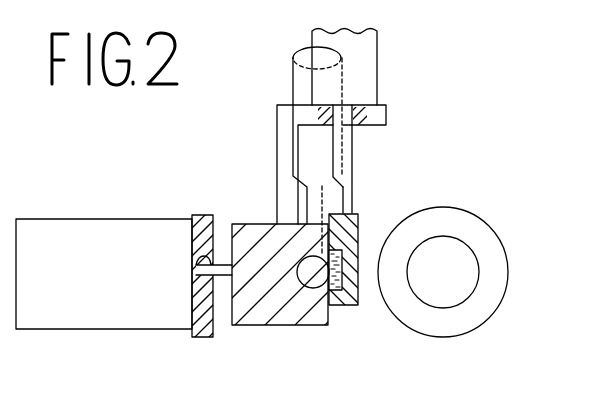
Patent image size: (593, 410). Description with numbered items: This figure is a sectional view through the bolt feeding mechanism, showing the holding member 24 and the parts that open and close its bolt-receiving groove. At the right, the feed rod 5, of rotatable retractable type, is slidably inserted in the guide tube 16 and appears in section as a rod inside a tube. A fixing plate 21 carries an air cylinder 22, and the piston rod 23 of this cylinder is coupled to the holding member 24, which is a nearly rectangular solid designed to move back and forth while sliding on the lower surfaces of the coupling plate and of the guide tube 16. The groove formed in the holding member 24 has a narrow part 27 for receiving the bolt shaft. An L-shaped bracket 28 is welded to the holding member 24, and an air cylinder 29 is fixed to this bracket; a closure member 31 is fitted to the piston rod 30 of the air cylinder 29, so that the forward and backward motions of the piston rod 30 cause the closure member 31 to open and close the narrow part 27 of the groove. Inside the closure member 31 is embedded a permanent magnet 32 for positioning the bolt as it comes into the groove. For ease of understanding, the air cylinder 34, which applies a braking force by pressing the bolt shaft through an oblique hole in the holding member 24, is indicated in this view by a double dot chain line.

The feed rod 5 is at (478, 262).
The guide tube 16 is at (480, 204).
The fixing plate 21 is at (205, 215).
The air cylinder 22 is at (118, 219).
The piston rod 23 is at (192, 253).
The holding member 24 is at (263, 325).
The narrow part 27 is at (312, 290).
The L-shaped bracket 28 is at (277, 140).
The air cylinder 29 is at (378, 64).
The piston rod 30 is at (352, 152).
The closure member 31 is at (360, 221).
The magnet 32 is at (338, 292).
The air cylinder 34 is at (293, 77).